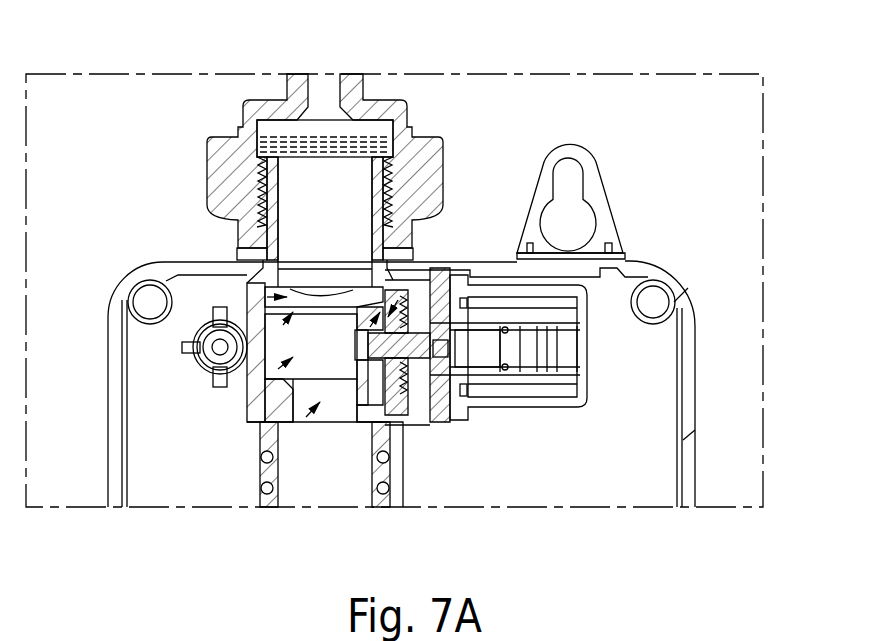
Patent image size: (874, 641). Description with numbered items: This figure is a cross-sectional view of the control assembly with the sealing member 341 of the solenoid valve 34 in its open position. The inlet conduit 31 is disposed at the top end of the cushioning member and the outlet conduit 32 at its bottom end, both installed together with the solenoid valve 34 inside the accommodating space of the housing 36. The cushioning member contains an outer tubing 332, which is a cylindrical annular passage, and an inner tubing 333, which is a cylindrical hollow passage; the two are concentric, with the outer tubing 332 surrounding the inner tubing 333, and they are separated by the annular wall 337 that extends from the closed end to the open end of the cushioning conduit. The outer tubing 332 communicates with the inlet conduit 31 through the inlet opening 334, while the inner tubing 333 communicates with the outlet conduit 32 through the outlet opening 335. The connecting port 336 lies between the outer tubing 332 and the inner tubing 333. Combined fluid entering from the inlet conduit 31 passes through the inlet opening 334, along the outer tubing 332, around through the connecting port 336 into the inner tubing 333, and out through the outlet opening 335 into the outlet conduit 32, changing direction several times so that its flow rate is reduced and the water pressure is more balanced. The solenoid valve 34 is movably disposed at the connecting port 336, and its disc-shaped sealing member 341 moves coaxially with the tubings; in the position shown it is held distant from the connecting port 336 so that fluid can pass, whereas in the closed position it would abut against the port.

The inlet conduit 31 is at (357, 85).
The outlet conduit 32 is at (398, 475).
The solenoid valve 34 is at (587, 348).
The housing 36 is at (687, 467).
The outer tubing 332 is at (267, 297).
The inner tubing 333 is at (286, 324).
The inlet opening 334 is at (323, 172).
The outlet opening 335 is at (360, 345).
The connecting port 336 is at (378, 322).
The annular wall 337 is at (280, 368).
The sealing member 341 is at (405, 292).